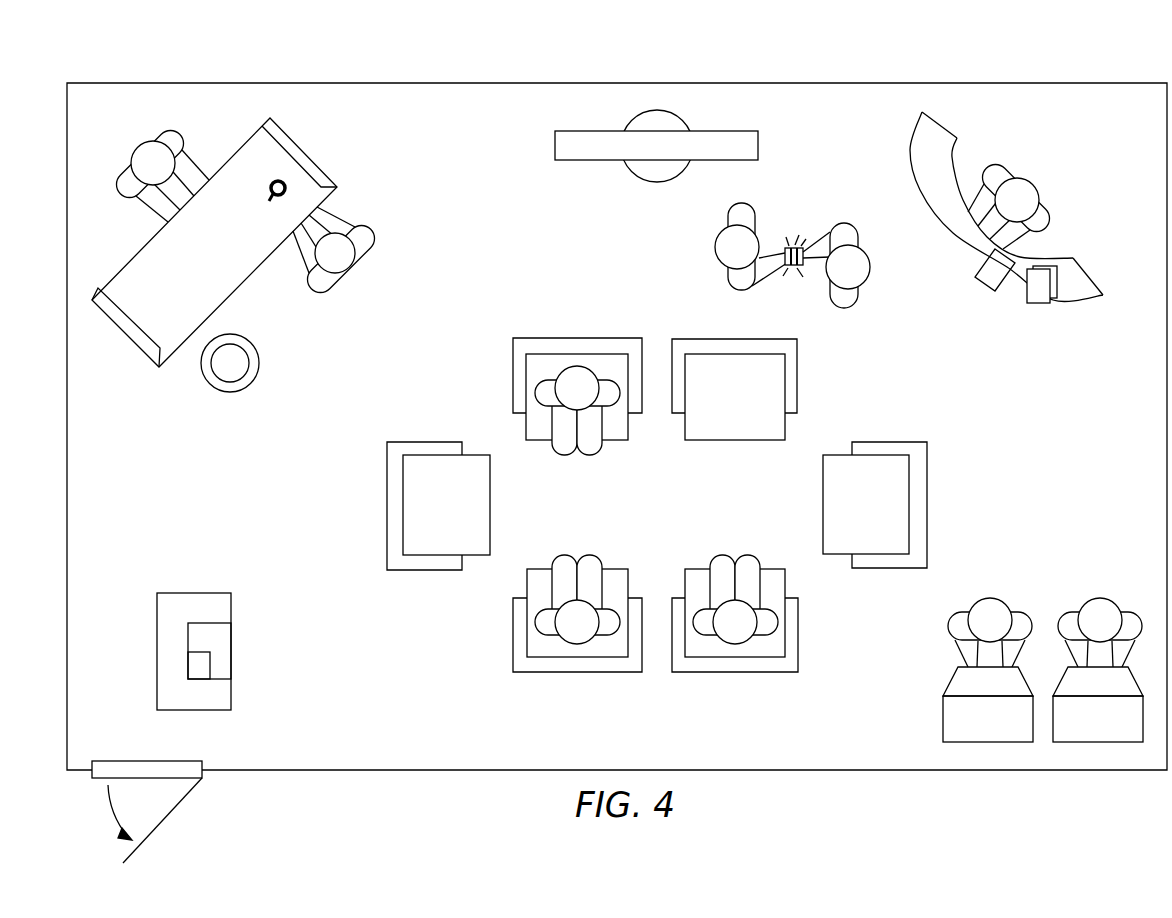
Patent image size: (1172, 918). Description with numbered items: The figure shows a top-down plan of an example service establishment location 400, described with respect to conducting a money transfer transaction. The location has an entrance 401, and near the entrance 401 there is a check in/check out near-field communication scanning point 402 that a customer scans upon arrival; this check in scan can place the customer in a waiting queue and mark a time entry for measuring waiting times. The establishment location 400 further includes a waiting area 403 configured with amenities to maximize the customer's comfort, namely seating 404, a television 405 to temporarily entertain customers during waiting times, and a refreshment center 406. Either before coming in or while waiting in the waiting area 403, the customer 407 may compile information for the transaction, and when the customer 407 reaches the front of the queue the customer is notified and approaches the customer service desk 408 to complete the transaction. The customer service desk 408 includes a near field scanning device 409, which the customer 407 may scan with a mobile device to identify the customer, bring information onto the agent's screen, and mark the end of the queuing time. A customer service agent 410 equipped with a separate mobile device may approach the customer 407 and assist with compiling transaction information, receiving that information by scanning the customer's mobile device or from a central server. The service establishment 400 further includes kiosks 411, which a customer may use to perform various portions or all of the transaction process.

The service establishment location 400 is at (326, 47).
The entrance 401 is at (172, 814).
The check in/check out near-field communication scanning point 402 is at (200, 593).
The waiting area 403 is at (858, 97).
The seating 404 is at (513, 372).
The television 405 is at (555, 137).
The refreshment center 406 is at (277, 161).
The customer 407 is at (724, 257).
The customer service desk 408 is at (913, 175).
The near field scanning device 409 is at (984, 285).
The customer service agent 410 is at (866, 278).
The kiosk 411 is at (1004, 728).